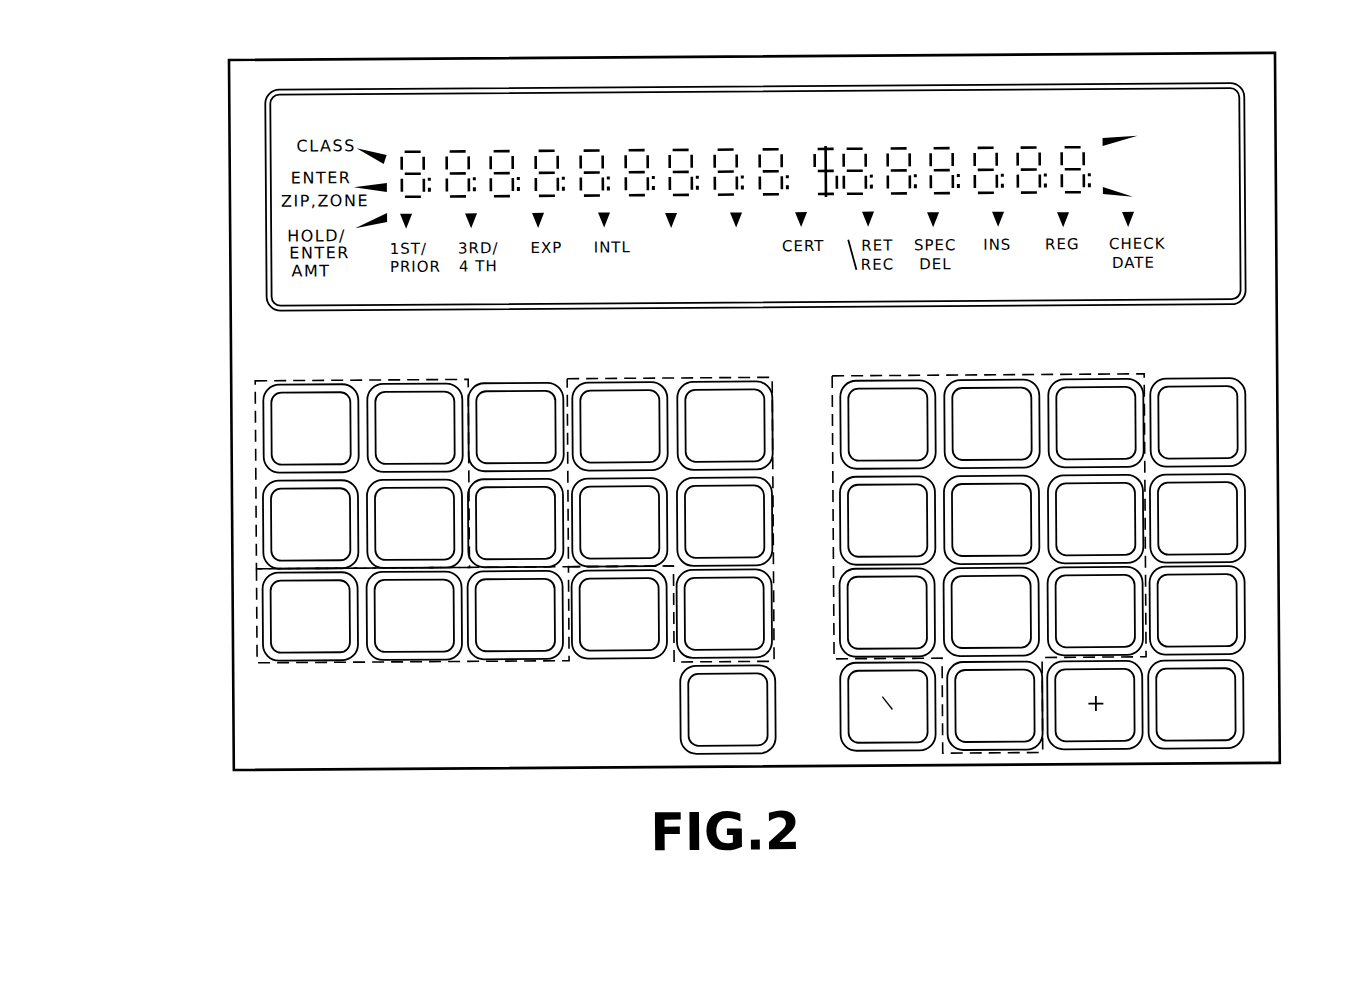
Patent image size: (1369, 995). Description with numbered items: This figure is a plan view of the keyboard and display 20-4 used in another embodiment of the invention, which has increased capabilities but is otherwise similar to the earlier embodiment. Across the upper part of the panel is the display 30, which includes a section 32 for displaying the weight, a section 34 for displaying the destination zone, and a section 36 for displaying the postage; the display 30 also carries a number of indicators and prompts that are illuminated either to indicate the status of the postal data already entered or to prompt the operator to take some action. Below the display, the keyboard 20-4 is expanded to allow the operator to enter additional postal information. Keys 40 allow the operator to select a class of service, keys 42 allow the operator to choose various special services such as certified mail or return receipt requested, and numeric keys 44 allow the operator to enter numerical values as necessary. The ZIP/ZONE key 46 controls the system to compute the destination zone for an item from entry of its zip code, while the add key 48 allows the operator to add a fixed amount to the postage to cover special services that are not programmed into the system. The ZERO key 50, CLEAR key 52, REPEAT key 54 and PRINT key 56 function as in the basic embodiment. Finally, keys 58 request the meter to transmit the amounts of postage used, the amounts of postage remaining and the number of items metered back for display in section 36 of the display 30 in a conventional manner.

The keyboard and display 20-4 is at (222, 393).
The display 30 is at (823, 126).
The weight display section 32 is at (530, 140).
The destination zone display section 34 is at (708, 133).
The postage display section 36 is at (982, 142).
The class of service keys 40 is at (250, 512).
The special services keys 42 is at (723, 375).
The numeric keys 44 is at (998, 375).
The ZIP/ZONE key 46 is at (1227, 430).
The add key 48 is at (1095, 736).
The ZERO key 50 is at (685, 725).
The CLEAR key 52 is at (853, 732).
The REPEAT key 54 is at (1224, 634).
The PRINT key 56 is at (1223, 727).
The postage used/remaining and piece count keys 58 is at (298, 667).